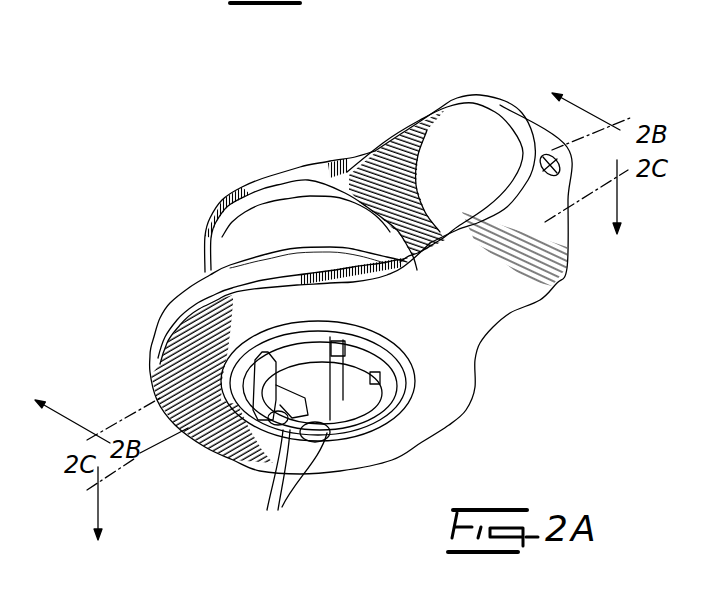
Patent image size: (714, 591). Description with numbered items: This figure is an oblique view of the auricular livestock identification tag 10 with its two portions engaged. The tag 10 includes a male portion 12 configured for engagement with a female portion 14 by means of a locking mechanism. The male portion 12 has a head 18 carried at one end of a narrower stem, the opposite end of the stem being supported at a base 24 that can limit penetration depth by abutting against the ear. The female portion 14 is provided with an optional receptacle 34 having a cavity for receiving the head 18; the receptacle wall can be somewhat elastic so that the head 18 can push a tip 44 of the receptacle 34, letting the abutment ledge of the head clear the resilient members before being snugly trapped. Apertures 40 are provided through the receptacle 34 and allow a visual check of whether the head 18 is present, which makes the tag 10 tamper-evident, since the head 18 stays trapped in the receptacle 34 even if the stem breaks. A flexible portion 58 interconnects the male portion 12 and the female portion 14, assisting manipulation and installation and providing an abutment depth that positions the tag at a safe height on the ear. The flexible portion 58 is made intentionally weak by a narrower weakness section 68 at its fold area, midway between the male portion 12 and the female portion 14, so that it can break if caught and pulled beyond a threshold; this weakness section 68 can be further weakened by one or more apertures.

The auricular livestock identification tag 10 is at (475, 70).
The male portion 12 is at (264, 167).
The female portion 14 is at (166, 290).
The head 18 is at (377, 400).
The base 24 is at (250, 237).
The receptacle 34 is at (265, 398).
The apertures 40 is at (291, 488).
The tip 44 is at (340, 433).
The flexible portion 58 is at (538, 95).
The weakness section 68 is at (545, 200).